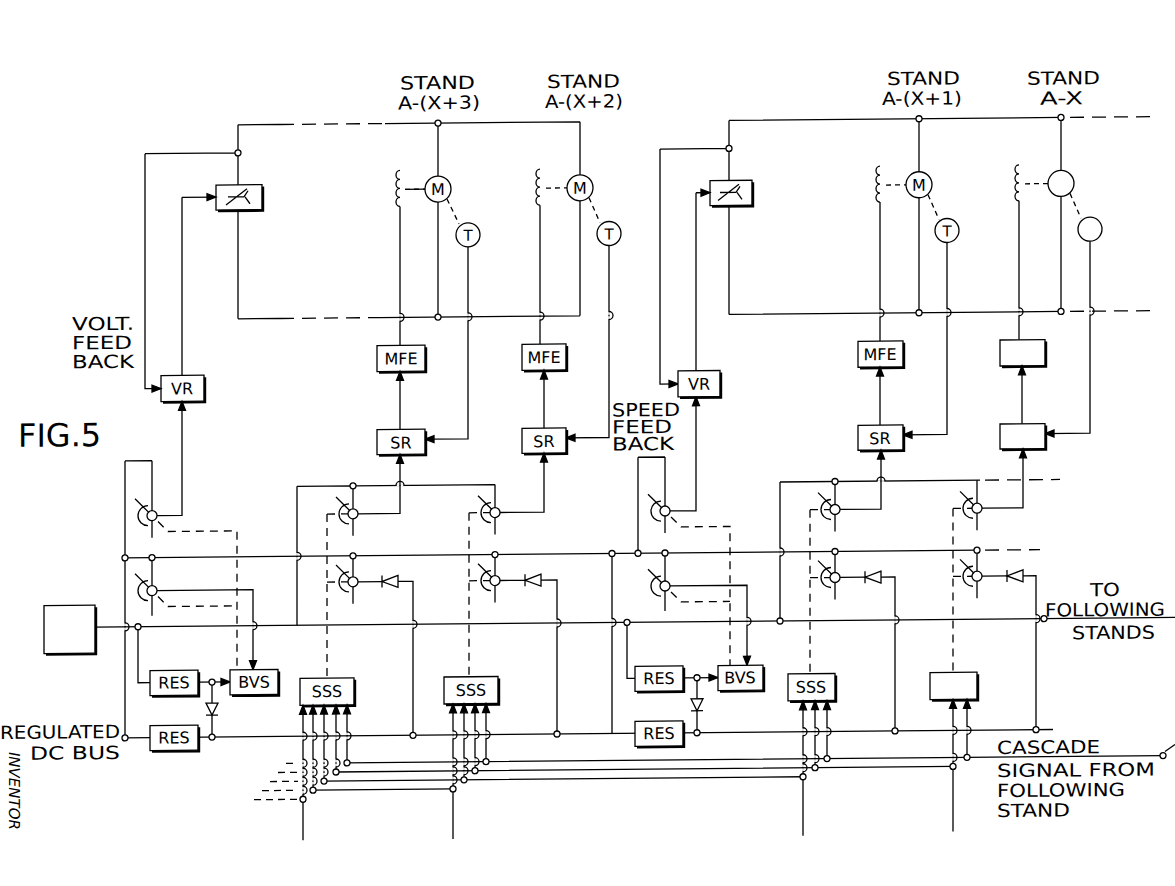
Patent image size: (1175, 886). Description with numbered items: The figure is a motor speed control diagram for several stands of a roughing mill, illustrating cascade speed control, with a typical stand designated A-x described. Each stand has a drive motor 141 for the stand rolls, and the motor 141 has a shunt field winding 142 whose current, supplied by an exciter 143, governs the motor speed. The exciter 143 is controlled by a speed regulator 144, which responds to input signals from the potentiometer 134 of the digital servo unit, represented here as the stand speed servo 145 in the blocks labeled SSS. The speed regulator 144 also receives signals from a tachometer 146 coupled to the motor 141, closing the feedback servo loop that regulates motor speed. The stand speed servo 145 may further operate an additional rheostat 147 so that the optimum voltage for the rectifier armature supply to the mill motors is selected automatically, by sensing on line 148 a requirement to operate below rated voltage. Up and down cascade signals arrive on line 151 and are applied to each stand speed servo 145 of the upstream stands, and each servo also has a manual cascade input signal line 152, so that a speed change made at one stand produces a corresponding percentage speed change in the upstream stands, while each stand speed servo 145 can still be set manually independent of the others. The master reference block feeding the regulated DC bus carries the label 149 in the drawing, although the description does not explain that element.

The potentiometer 134 is at (983, 525).
The drive motor 141 is at (1075, 187).
The shunt field winding 142 is at (1012, 186).
The exciter 143 is at (1045, 361).
The speed regulator 144 is at (1015, 433).
The stand speed servo 145 is at (957, 681).
The tachometer 146 is at (1100, 241).
The rheostat 147 is at (981, 596).
The line 148 is at (1005, 737).
The master reference MR 149 is at (63, 606).
The cascade signal line 151 is at (980, 770).
The manual cascade input signal line 152 is at (952, 821).